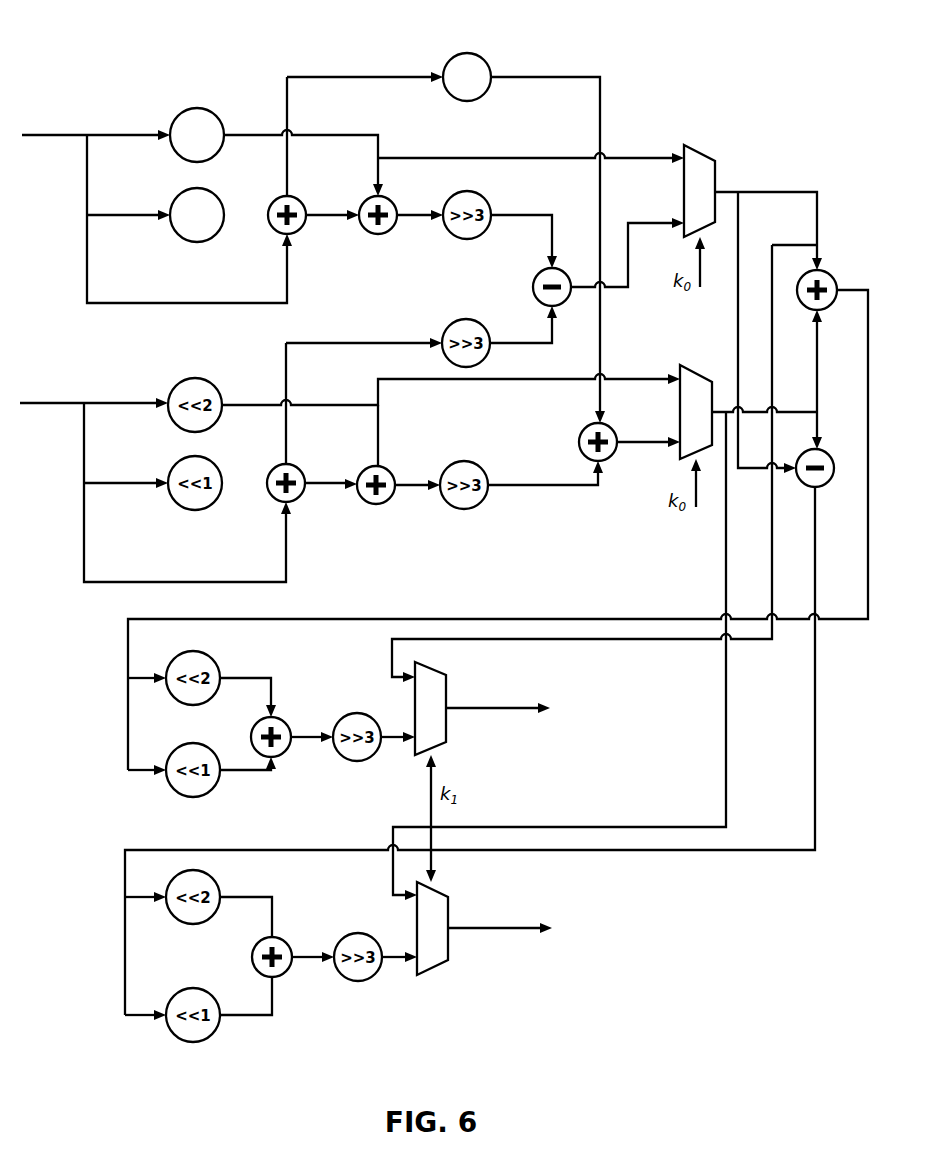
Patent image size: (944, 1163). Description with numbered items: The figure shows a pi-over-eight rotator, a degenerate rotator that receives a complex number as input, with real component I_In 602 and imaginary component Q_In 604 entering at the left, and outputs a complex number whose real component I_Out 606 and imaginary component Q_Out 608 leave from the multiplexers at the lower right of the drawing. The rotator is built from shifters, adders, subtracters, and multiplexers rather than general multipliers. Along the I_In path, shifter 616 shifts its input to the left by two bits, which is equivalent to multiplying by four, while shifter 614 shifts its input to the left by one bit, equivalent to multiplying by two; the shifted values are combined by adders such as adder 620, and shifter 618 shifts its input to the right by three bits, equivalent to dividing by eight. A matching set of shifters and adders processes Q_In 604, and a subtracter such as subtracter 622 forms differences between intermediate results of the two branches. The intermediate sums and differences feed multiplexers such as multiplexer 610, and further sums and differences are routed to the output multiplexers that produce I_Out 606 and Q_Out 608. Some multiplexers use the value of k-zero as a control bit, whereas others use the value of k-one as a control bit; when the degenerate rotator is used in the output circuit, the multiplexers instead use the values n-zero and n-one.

The real component I_In 602 is at (96, 128).
The imaginary component Q_In 604 is at (94, 392).
The real component I_Out 606 is at (509, 724).
The imaginary component Q_Out 608 is at (514, 948).
The multiplexer 610 is at (700, 176).
The shifter 614 is at (197, 234).
The shifter 616 is at (197, 120).
The shifter 618 is at (467, 58).
The adder 620 is at (378, 235).
The subtracter 622 is at (527, 287).